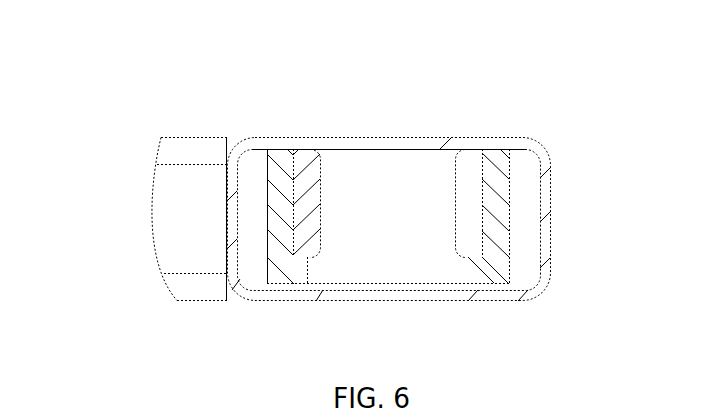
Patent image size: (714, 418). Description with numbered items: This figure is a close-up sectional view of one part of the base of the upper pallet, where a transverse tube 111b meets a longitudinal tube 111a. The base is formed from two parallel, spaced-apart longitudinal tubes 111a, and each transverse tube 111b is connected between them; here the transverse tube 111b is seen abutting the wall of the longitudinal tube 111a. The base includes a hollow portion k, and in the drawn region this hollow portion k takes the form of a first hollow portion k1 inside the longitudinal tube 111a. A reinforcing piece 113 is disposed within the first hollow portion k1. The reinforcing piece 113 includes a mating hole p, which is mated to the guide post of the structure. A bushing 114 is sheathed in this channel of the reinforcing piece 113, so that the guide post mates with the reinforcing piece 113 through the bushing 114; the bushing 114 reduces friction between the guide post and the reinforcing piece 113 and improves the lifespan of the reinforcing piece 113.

The hollow portion k is at (169, 56).
The first hollow portion k1 is at (250, 162).
The longitudinal tube 111a is at (541, 157).
The transverse tube 111b is at (181, 152).
The reinforcing piece 113 is at (295, 272).
The bushing 114 is at (307, 153).
The mating hole p is at (410, 175).